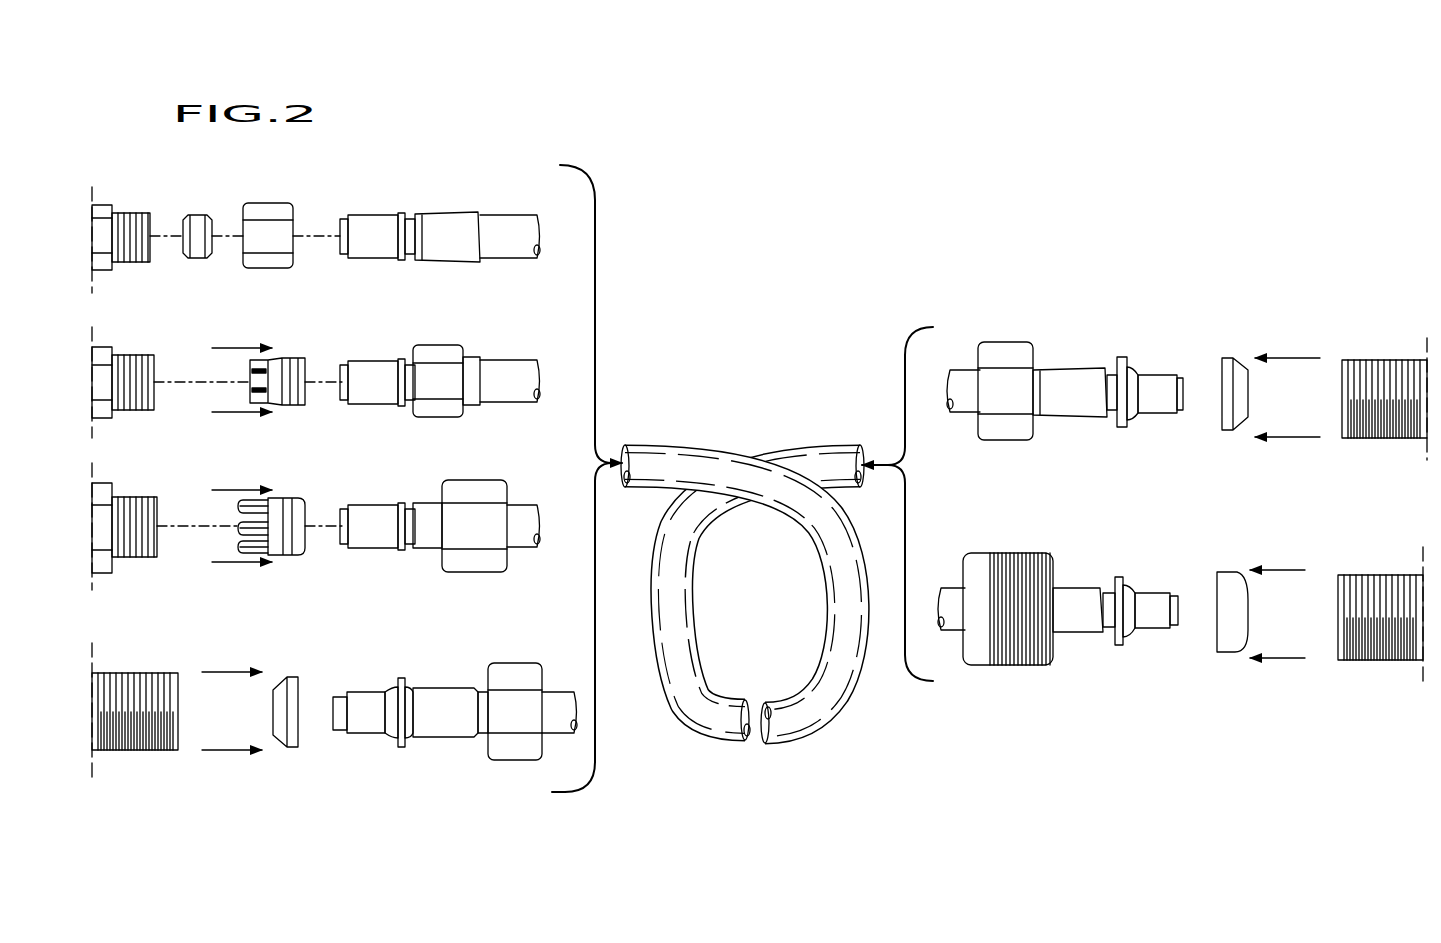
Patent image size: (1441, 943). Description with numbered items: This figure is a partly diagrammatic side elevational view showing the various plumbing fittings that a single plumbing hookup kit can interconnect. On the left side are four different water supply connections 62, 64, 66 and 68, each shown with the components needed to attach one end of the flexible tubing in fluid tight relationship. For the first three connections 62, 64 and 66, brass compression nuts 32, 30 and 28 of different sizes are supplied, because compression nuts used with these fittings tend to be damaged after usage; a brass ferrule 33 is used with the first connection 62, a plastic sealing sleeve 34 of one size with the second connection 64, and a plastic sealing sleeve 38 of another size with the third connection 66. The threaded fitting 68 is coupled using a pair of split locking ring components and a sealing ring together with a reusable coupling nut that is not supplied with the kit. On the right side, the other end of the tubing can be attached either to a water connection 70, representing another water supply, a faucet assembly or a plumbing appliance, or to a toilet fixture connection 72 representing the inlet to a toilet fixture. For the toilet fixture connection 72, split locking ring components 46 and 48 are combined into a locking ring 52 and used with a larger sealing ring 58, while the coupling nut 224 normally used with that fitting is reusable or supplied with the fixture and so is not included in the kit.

The brass compression nut 28 is at (485, 572).
The brass compression nut 30 is at (433, 417).
The brass compression nut 32 is at (272, 268).
The brass ferrule 33 is at (200, 214).
The plastic sealing sleeve 34 is at (290, 358).
The plastic sealing sleeve 38 is at (290, 497).
The split locking ring component 46 is at (1120, 577).
The split locking ring component 48 is at (1118, 645).
The locking ring 52 is at (1140, 646).
The sealing ring 58 is at (1225, 653).
The water supply connection 62 is at (130, 208).
The water supply connection 64 is at (138, 353).
The water supply connection 66 is at (140, 495).
The threaded fitting 68 is at (147, 673).
The water connection 70 is at (1370, 360).
The toilet fixture connection 72 is at (1378, 575).
The coupling nut 224 is at (985, 665).